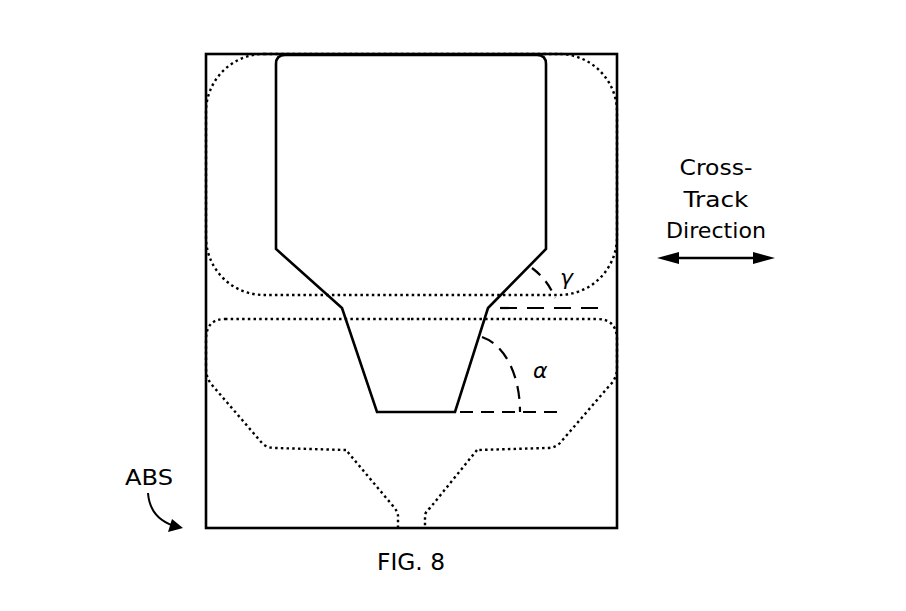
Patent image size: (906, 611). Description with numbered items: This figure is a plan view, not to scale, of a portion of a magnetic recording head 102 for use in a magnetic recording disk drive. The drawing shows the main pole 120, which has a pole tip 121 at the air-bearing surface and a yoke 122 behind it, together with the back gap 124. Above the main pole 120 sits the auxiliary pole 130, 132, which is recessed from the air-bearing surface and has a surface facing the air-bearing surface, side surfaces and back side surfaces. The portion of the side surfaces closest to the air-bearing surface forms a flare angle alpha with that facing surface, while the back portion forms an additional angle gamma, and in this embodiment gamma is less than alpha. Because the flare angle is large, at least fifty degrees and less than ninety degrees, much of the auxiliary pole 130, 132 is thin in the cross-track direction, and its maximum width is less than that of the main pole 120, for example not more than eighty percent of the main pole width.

The magnetic recording head 102 is at (170, 67).
The auxiliary pole 130 is at (321, 251).
The auxiliary pole 132 is at (276, 232).
The back gap 124 is at (233, 282).
The main pole 120 is at (222, 413).
The yoke 122 is at (590, 426).
The pole tip 121 is at (452, 518).